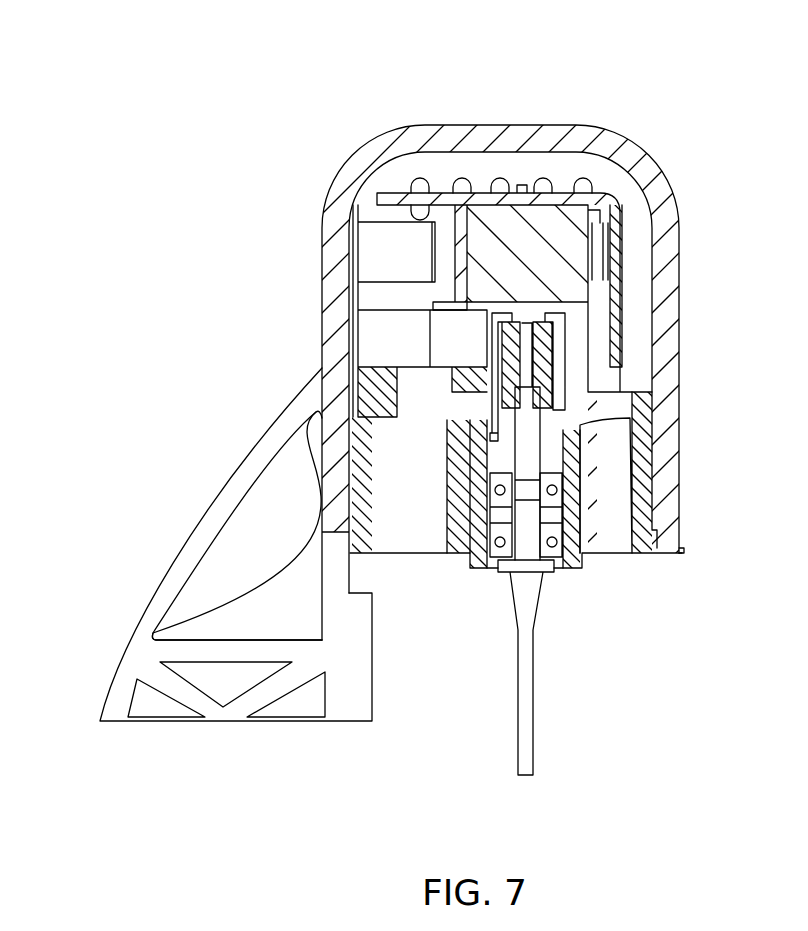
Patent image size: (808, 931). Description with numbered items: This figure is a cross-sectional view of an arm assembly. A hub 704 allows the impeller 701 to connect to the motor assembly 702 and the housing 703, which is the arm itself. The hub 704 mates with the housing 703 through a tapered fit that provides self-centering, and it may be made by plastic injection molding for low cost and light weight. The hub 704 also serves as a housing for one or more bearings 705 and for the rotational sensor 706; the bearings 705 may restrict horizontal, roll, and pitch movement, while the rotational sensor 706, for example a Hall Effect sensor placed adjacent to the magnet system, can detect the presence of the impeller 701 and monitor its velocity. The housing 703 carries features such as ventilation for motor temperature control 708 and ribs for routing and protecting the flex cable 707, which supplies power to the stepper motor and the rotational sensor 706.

The impeller 701 is at (532, 593).
The motor assembly 702 is at (537, 205).
The housing 703 is at (336, 180).
The hub 704 is at (684, 550).
The bearings 705 is at (560, 553).
The rotational sensor 706 is at (493, 437).
The flex cable 707 is at (367, 333).
The ventilation for motor temperature control 708 is at (500, 182).